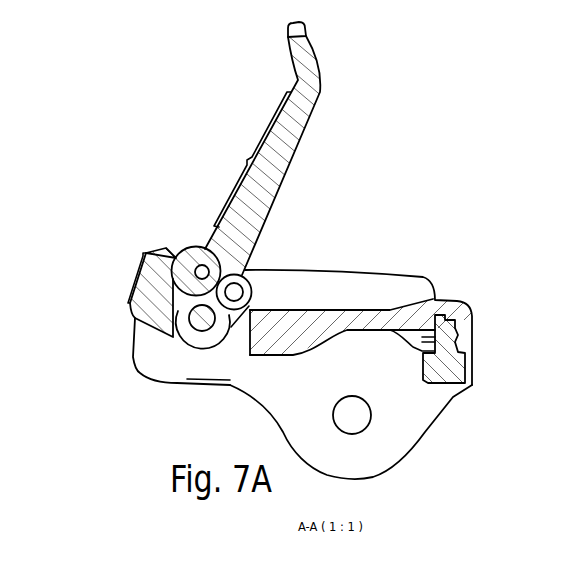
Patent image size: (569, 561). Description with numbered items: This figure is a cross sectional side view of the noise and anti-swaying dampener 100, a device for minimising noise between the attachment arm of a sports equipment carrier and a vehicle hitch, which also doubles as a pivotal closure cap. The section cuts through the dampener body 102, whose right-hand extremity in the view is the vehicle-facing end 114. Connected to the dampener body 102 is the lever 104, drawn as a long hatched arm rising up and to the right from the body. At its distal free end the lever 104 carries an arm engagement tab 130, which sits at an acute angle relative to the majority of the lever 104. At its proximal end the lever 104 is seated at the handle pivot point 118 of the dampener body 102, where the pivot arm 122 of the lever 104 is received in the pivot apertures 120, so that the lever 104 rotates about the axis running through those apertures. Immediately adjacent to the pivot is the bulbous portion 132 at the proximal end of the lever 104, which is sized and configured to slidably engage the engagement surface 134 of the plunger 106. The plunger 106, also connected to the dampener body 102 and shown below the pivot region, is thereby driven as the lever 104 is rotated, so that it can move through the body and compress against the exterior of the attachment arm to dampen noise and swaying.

The noise and anti-swaying dampener 100 is at (115, 98).
The dampener body 102 is at (422, 278).
The lever 104 is at (253, 154).
The plunger 106 is at (202, 348).
The vehicle-facing end 114 is at (473, 328).
The handle pivot point 118 is at (194, 267).
The pivot apertures 120 is at (202, 270).
The pivot arm 122 is at (207, 270).
The arm engagement tab 130 is at (291, 44).
The bulbous portion 132 is at (251, 287).
The engagement surface 134 is at (227, 318).